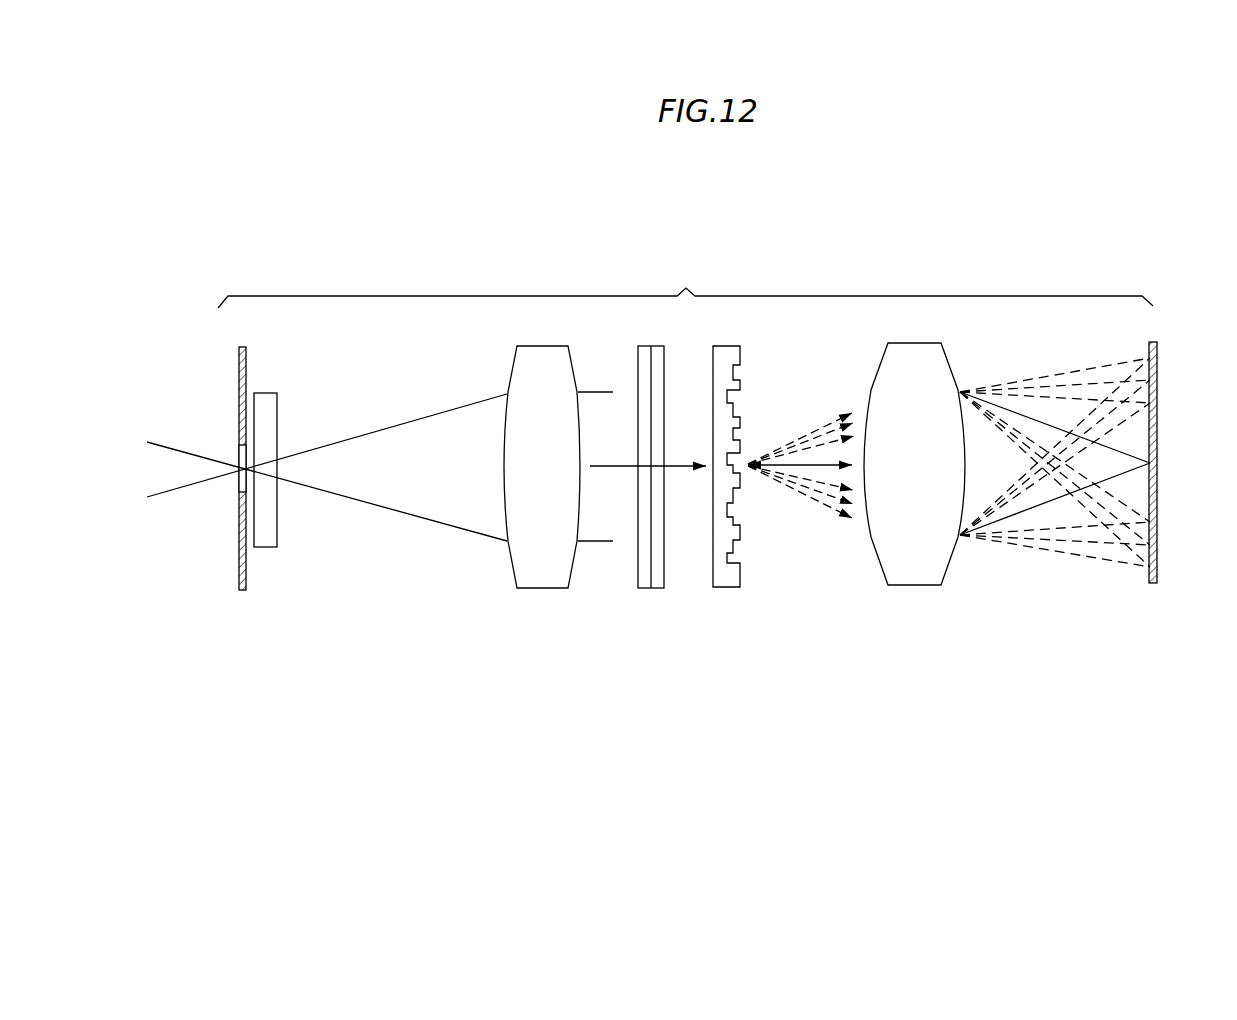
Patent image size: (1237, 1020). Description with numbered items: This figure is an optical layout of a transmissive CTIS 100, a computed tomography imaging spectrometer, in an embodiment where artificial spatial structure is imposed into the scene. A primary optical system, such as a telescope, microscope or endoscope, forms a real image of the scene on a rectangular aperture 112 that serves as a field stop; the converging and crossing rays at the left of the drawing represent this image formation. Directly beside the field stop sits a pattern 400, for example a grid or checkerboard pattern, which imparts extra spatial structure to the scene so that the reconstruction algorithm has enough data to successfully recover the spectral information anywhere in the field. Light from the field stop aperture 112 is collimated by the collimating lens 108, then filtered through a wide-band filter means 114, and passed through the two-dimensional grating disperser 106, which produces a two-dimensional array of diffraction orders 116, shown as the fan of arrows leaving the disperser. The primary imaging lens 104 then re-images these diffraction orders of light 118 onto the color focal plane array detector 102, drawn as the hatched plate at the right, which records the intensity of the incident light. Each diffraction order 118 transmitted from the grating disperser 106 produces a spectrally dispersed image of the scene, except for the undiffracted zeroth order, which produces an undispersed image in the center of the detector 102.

The transmissive CTIS 100 is at (686, 288).
The color focal plane array detector 102 is at (1153, 583).
The primary imaging lens 104 is at (913, 586).
The 2D grating disperser 106 is at (727, 588).
The collimating lens 108 is at (542, 588).
The rectangular aperture 112 is at (231, 450).
The wide-band filter means 114 is at (643, 588).
The diffraction orders 116 is at (797, 513).
The diffraction orders of light 118 is at (1050, 582).
The pattern 400 is at (265, 548).